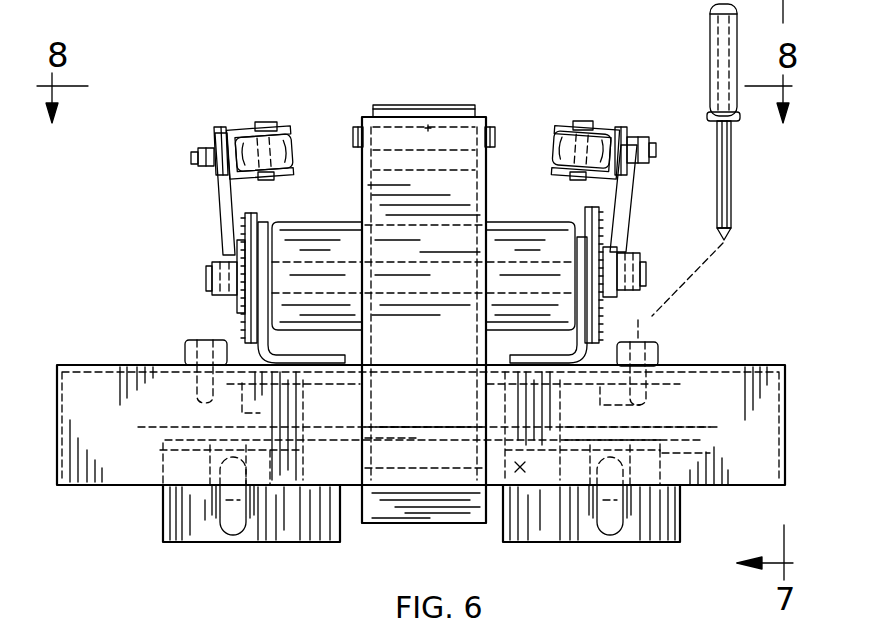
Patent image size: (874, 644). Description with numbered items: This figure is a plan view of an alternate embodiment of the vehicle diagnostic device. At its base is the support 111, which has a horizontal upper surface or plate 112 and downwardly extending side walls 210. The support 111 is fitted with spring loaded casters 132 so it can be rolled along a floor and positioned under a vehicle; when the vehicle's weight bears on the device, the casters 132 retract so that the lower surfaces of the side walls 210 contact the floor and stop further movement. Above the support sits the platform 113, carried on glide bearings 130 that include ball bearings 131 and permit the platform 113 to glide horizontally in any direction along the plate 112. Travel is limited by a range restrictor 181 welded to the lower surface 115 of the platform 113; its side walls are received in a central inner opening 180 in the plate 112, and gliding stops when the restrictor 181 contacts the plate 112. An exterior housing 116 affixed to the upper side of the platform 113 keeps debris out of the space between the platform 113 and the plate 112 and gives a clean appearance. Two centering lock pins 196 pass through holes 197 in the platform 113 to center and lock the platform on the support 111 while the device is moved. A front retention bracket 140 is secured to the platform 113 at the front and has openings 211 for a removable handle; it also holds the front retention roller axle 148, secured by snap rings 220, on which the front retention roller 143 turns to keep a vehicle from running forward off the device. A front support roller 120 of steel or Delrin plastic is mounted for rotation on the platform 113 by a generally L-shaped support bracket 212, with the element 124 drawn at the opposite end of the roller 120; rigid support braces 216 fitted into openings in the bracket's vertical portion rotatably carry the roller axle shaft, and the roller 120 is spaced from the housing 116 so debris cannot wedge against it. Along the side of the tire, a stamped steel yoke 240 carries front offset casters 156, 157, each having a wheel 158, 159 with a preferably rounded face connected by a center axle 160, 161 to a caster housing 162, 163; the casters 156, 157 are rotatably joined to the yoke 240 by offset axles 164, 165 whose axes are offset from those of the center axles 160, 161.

The support 111 is at (407, 425).
The horizontal upper surface or plate 112 is at (167, 427).
The platform 113 is at (670, 357).
The lower surface 115 is at (185, 380).
The exterior housing 116 is at (763, 464).
The front support roller 120 is at (307, 233).
The bracket 124 is at (262, 350).
The glide bearings 130 is at (655, 405).
The ball bearings 131 is at (658, 421).
The spring loaded casters 132 is at (607, 545).
The front retention bracket 140 is at (415, 515).
The front retention roller 143 is at (412, 103).
The front retention roller axle 148 is at (445, 100).
The front offset caster 156 is at (597, 123).
The front offset caster 157 is at (240, 128).
The wheel 158 is at (560, 133).
The wheel 159 is at (275, 137).
The center axle 160 is at (580, 123).
The center axle 161 is at (258, 128).
The caster housing 162 is at (615, 128).
The caster housing 163 is at (228, 128).
The offset axle 164 is at (648, 147).
The offset axle 165 is at (198, 156).
The central inner opening 180 is at (340, 418).
The range restrictor 181 is at (520, 467).
The centering lock pins 196 is at (710, 32).
The holes 197 is at (648, 338).
The downwardly extending side walls 210 is at (163, 520).
The openings 211 is at (488, 341).
The L-shaped support bracket 212 is at (580, 347).
The rigid support braces 216 is at (607, 327).
The snap rings 220 is at (493, 122).
The yoke 240 is at (630, 193).